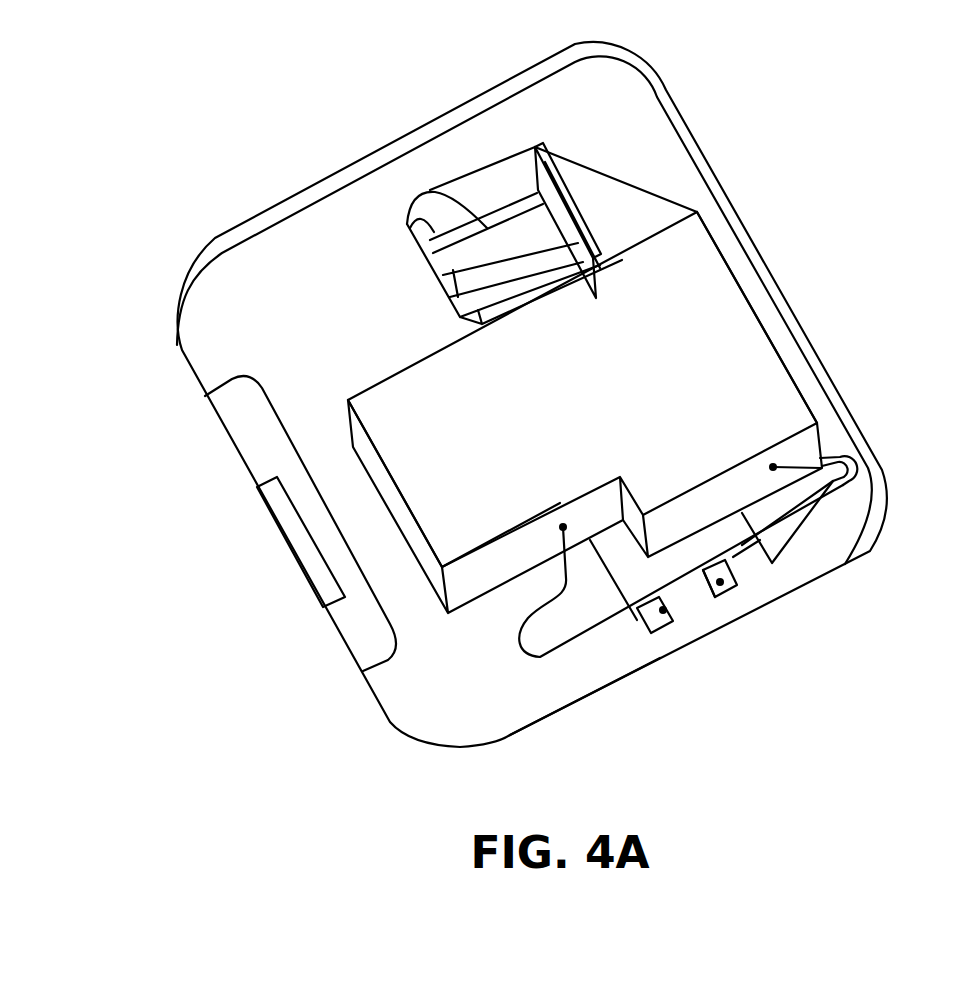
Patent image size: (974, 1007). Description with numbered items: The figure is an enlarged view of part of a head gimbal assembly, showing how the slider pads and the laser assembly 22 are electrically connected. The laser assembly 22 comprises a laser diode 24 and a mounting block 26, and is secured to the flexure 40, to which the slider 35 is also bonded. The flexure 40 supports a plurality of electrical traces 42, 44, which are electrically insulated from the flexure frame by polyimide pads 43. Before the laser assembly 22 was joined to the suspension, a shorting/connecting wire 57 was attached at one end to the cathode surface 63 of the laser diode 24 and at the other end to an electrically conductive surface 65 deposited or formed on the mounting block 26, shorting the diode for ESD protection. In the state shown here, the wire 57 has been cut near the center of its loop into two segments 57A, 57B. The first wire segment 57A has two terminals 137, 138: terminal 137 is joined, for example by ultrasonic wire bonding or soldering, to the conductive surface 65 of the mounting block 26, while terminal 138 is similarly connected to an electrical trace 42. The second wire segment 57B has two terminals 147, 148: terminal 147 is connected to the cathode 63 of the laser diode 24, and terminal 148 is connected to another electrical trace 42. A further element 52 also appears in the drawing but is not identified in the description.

The laser assembly 22 is at (334, 440).
The laser diode 24 is at (793, 393).
The mounting block 26 is at (733, 303).
The slider 35 is at (648, 110).
The flexure 40 is at (215, 280).
The electrical trace 42 is at (717, 600).
The polyimide pad 43 is at (420, 240).
The electrical trace 44 is at (527, 270).
The connector 52 is at (562, 197).
The shorting/connecting wire 57 is at (623, 640).
The first wire segment 57A is at (584, 652).
The second wire segment 57B is at (820, 510).
The cathode surface 63 is at (811, 442).
The electrical conductive surface 65 is at (495, 560).
The terminal 137 is at (563, 527).
The terminal 138 is at (648, 597).
The terminal 147 is at (773, 467).
The terminal 148 is at (720, 582).